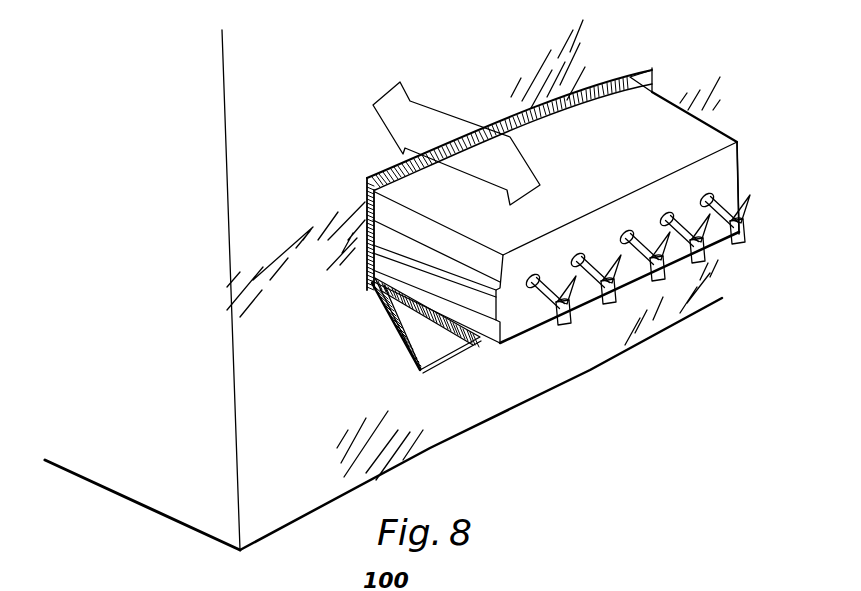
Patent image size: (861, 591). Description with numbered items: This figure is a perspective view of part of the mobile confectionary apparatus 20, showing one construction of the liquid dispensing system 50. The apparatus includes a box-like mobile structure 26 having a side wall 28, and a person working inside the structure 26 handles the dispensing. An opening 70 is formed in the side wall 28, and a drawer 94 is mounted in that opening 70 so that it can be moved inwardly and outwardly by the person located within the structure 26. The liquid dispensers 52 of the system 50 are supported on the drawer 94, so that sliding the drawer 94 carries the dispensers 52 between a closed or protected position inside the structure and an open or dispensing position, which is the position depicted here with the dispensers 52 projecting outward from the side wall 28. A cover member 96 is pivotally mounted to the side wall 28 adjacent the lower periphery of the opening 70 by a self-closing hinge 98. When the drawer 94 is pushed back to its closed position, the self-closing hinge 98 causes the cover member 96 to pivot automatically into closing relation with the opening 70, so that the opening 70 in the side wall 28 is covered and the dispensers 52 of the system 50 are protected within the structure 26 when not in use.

The mobile confectionary apparatus 20 is at (192, 122).
The mobile structure 26 is at (125, 497).
The side wall 28 is at (270, 493).
The liquid dispensing system 50 is at (728, 130).
The liquid dispensers 52 is at (583, 313).
The opening 70 is at (654, 82).
The drawer 94 is at (741, 165).
The cover member 96 is at (450, 362).
The self-closing hinge 98 is at (368, 286).